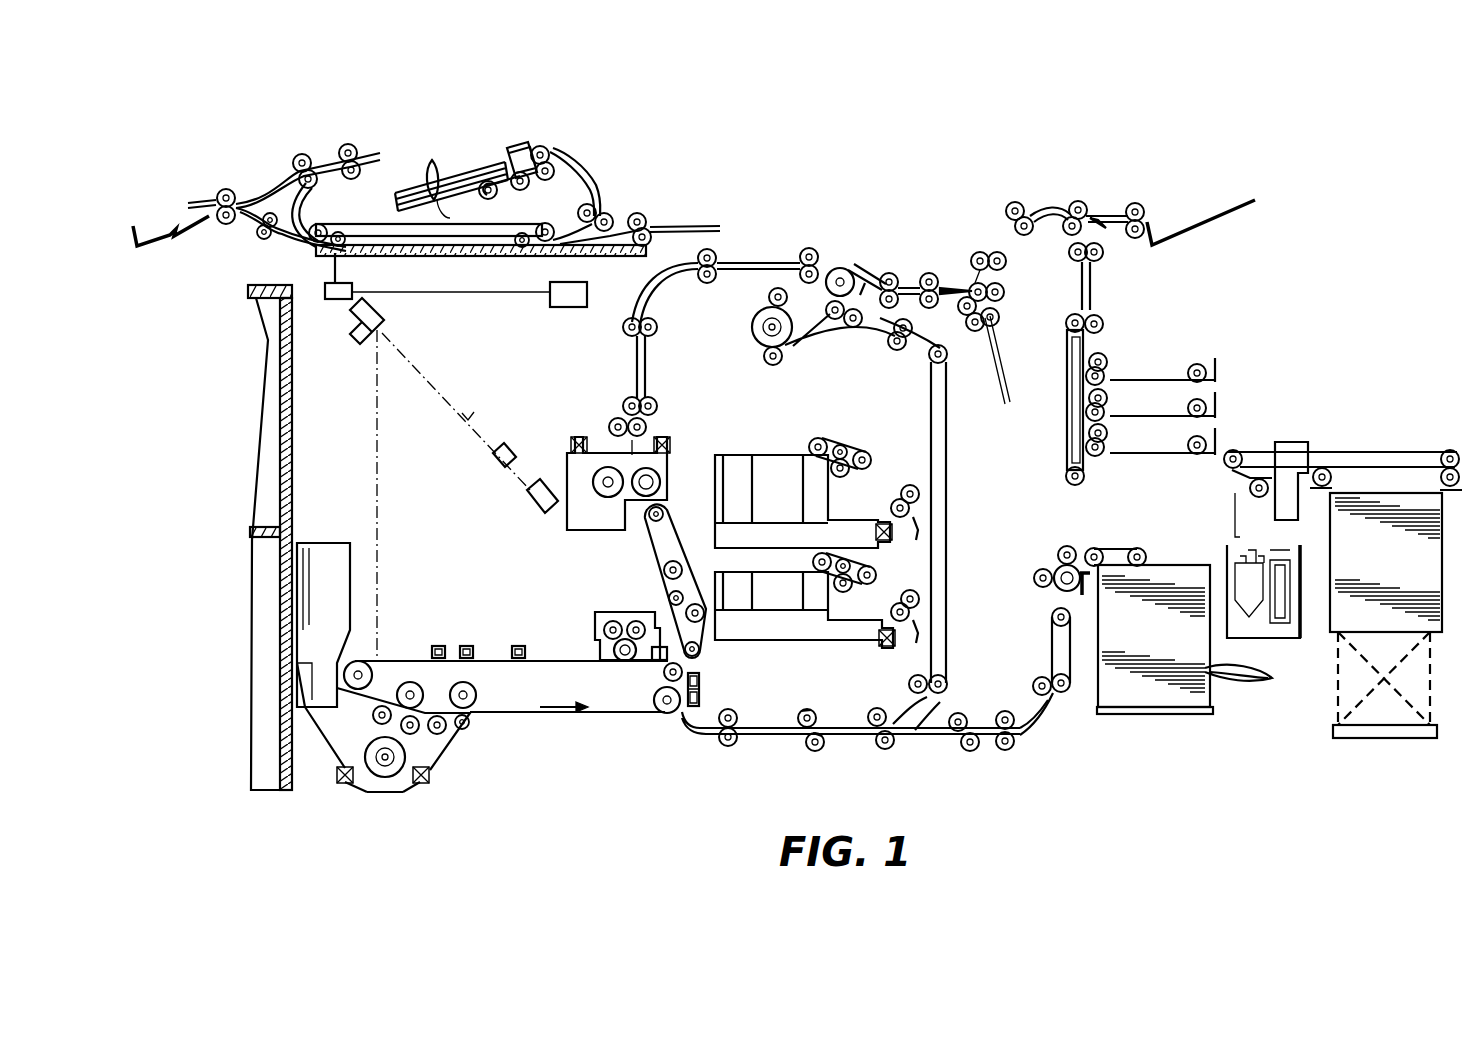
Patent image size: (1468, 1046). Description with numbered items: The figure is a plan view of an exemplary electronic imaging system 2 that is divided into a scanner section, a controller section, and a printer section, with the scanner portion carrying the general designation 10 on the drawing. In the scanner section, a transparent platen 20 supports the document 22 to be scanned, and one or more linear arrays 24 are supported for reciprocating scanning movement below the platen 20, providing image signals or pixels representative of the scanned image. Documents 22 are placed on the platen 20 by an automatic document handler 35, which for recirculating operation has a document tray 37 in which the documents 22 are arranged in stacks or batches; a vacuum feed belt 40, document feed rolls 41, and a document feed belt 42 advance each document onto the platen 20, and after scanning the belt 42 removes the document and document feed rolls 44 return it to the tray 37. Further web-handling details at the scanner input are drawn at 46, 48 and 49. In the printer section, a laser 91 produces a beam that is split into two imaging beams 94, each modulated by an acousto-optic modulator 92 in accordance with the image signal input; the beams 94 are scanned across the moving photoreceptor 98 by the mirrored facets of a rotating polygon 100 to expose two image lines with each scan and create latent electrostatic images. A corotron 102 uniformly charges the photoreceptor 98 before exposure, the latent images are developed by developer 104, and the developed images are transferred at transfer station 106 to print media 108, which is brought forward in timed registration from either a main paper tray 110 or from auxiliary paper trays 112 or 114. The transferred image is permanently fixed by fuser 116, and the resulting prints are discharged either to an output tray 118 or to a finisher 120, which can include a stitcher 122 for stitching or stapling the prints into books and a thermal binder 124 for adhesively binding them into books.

The electronic imaging system 2 is at (822, 172).
The web supply 10 is at (251, 170).
The transparent platen 20 is at (498, 258).
The document 22 is at (430, 174).
The linear array 24 is at (327, 285).
The automatic document handler 35 is at (448, 146).
The document tray 37 is at (440, 192).
The vacuum feed belt 40 is at (532, 183).
The document feed rolls 41 is at (550, 152).
The document feed belt 42 is at (500, 218).
The document feed rolls 44 is at (352, 180).
The web input 46 is at (666, 216).
The web guide 48 is at (208, 228).
The nip rollers 49 is at (638, 212).
The laser 91 is at (543, 502).
The acousto-optic modulator 92 is at (505, 448).
The imaging beams 94 is at (480, 405).
The photoreceptor 98 is at (545, 660).
The rotating polygon 100 is at (362, 342).
The corotron 102 is at (517, 645).
The developer 104 is at (458, 765).
The transfer station 106 is at (668, 738).
The print media 108 is at (1258, 678).
The main paper tray 110 is at (1135, 715).
The auxiliary paper tray 112 is at (768, 638).
The auxiliary paper tray 114 is at (768, 458).
The fuser 116 is at (677, 455).
The output tray 118 is at (1238, 216).
The finisher 120 is at (1275, 380).
The stitcher 122 is at (1220, 390).
The thermal binder 124 is at (1368, 440).